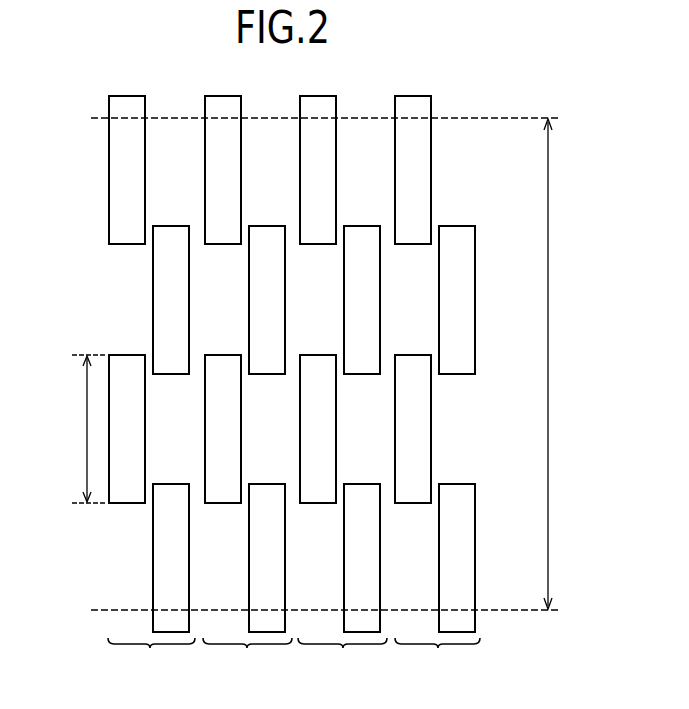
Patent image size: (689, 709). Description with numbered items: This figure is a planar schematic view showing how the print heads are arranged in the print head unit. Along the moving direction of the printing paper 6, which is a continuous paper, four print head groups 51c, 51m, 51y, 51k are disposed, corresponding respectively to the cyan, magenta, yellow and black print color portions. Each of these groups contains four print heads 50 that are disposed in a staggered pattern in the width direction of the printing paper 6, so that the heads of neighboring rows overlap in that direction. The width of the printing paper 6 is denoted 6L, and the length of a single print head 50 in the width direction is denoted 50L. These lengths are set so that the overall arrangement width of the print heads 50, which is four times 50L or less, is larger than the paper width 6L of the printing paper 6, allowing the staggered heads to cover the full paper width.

The print head 50 is at (145, 172).
The printing paper 6 is at (530, 612).
The width of the printing paper 6L is at (565, 364).
The length of the print head 50L is at (69, 429).
The print head group (cyan) 51c is at (151, 659).
The print head group (magenta) 51m is at (247, 659).
The print head group (yellow) 51y is at (342, 659).
The print head group (black) 51k is at (437, 659).